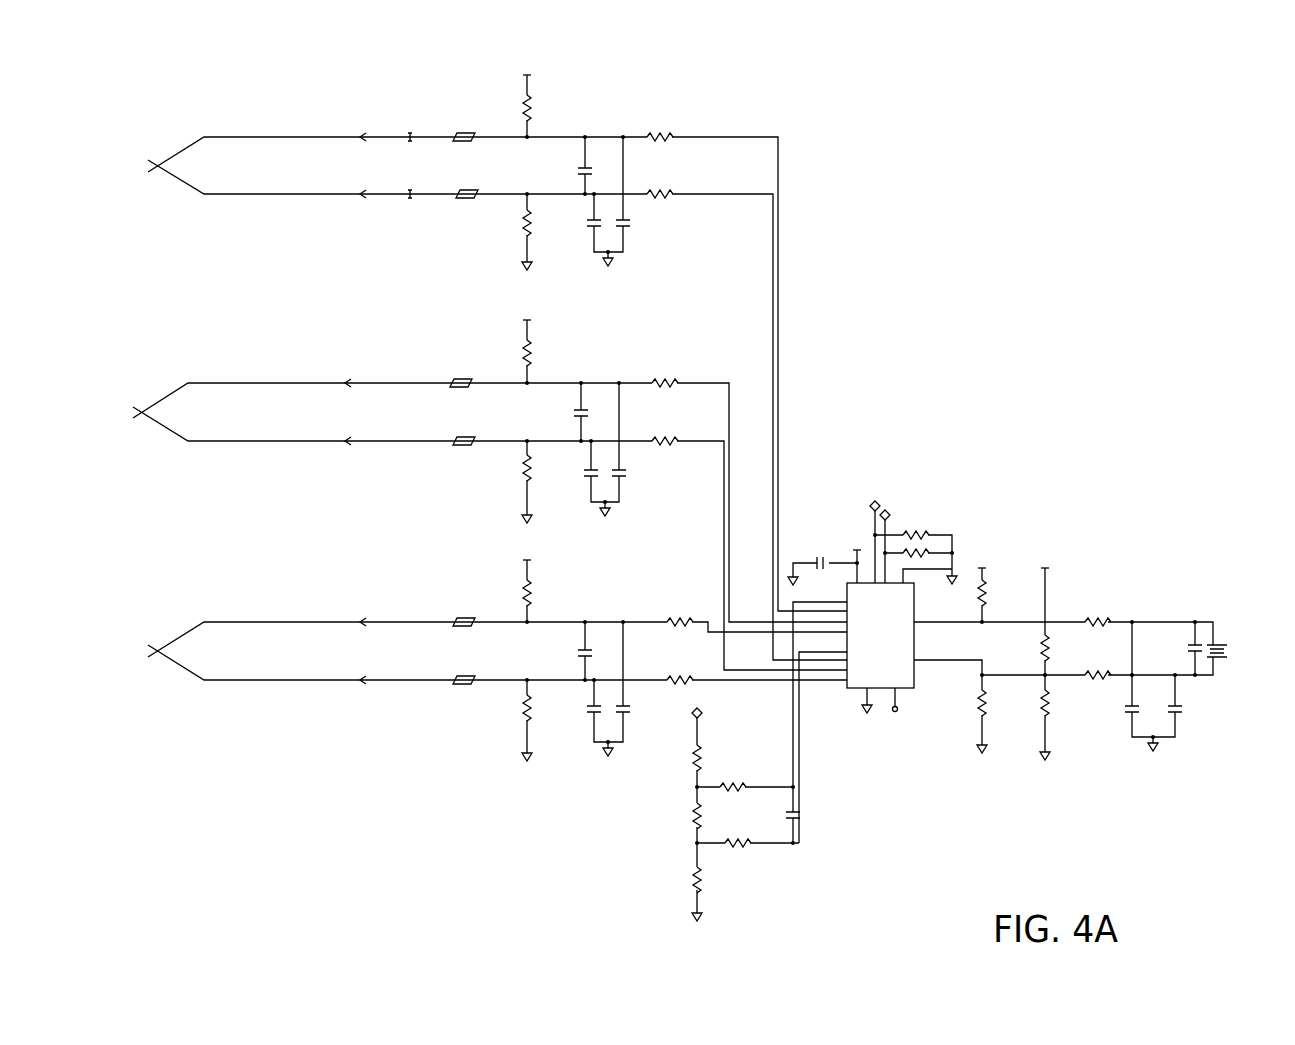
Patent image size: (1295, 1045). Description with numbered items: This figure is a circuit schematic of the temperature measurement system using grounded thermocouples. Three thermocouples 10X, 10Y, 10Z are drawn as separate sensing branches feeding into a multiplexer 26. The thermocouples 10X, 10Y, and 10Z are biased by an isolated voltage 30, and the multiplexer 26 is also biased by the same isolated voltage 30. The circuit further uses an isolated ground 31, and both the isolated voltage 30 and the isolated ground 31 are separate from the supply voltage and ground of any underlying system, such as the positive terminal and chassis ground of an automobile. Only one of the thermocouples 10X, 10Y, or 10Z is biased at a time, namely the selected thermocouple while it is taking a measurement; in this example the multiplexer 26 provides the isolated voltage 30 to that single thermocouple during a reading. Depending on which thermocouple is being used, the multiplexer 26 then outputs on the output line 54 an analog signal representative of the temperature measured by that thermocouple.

The thermocouple 10X is at (253, 104).
The thermocouple 10Y is at (253, 355).
The thermocouple 10Z is at (253, 589).
The isolated voltage 30 is at (528, 73).
The isolated ground 31 is at (613, 256).
The multiplexer 26 is at (908, 677).
The output line 54 is at (1218, 638).